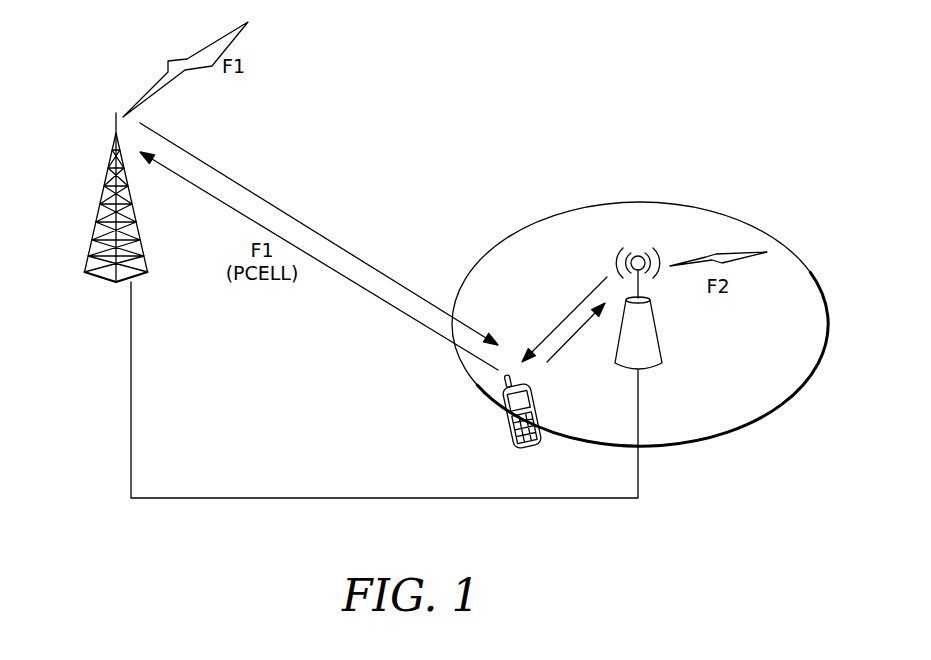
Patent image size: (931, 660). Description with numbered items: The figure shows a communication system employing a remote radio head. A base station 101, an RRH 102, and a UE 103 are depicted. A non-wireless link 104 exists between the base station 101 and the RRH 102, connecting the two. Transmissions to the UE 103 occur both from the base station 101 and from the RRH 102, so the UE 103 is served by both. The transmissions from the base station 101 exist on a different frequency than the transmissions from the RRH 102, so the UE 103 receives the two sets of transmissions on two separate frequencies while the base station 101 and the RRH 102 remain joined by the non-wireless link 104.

The base station 101 is at (100, 200).
The RRH 102 is at (658, 330).
The UE 103 is at (500, 423).
The non-wireless link 104 is at (386, 497).